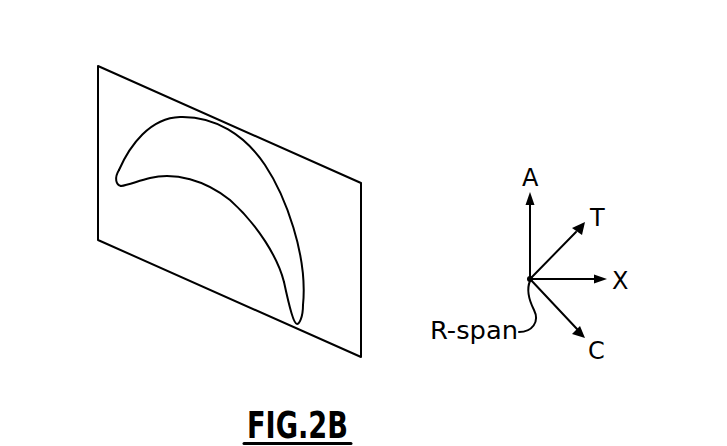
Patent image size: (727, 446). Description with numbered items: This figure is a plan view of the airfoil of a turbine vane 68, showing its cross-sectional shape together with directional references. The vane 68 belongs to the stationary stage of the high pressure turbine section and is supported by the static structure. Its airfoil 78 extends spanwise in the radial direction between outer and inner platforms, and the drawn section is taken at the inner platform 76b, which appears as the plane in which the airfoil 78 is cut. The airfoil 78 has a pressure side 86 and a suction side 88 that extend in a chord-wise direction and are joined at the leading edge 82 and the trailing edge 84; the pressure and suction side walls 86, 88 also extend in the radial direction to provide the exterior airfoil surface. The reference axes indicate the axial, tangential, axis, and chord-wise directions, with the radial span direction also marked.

The vane 68 is at (333, 105).
The inner platform 76b is at (158, 79).
The airfoil 78 is at (118, 193).
The leading edge 82 is at (121, 181).
The trailing edge 84 is at (298, 325).
The pressure side 86 is at (221, 194).
The suction side 88 is at (228, 128).